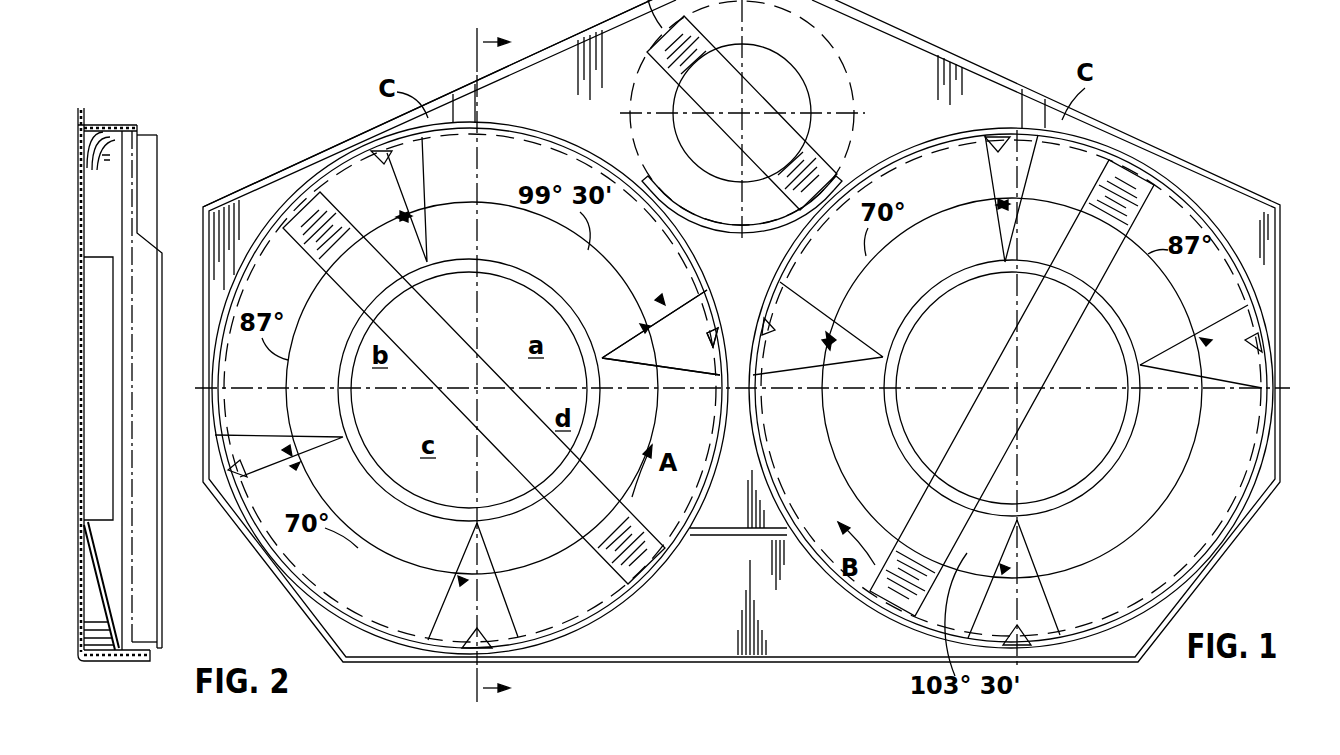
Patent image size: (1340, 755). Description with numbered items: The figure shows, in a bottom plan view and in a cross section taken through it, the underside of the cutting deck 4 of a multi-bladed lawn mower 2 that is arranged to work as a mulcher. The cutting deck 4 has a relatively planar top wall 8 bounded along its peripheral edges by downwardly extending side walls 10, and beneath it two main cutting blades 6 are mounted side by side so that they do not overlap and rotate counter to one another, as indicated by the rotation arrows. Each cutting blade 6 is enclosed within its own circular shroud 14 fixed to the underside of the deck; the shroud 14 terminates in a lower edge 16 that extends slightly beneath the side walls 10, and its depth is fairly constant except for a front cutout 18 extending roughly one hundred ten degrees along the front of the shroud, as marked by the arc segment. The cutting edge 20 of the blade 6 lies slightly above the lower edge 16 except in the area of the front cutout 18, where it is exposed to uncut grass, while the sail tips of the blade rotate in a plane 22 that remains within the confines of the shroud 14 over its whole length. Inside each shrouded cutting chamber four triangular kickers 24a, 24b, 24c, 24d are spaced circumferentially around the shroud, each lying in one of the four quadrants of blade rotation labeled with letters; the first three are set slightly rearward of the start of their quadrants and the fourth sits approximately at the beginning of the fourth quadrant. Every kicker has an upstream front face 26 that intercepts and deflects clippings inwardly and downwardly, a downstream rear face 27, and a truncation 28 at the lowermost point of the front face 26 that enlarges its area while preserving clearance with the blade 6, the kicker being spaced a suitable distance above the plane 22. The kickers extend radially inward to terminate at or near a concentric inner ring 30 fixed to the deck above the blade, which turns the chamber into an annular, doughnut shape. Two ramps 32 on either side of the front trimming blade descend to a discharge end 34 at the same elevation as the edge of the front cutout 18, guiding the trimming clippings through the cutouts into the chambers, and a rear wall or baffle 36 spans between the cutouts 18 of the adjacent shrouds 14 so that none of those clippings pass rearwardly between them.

In FIG. 1, the multi-bladed lawn mower 2 is at (1163, 42).
In FIG. 1, the cutting deck 4 is at (965, 60).
In FIG. 2, the cutting deck 4 is at (78, 332).
In FIG. 1, the cutting blade 6 is at (627, 565).
In FIG. 1, the top wall 8 is at (866, 77).
In FIG. 1, the side wall 10 is at (535, 55).
In FIG. 2, the side wall 10 is at (112, 665).
In FIG. 1, the circular shroud 14 is at (678, 556).
In FIG. 2, the circular shroud 14 is at (100, 125).
In FIG. 2, the lower edge 16 is at (155, 652).
In FIG. 1, the front cutout 18 is at (257, 223).
In FIG. 2, the front cutout 18 is at (138, 197).
In FIG. 1, the cutting edge 20 is at (283, 248).
In FIG. 2, the cutting edge 20 is at (157, 150).
In FIG. 2, the plane of sail tips 22 is at (133, 558).
In FIG. 1, the kicker 24a is at (667, 302).
In FIG. 1, the kicker 24b is at (422, 180).
In FIG. 1, the kicker 24c is at (257, 437).
In FIG. 1, the kicker 24d is at (445, 602).
In FIG. 2, the kicker 24d is at (110, 590).
In FIG. 1, the front face 26 is at (677, 366).
In FIG. 1, the rear face 27 is at (677, 336).
In FIG. 1, the truncation 28 is at (722, 332).
In FIG. 2, the truncation 28 is at (83, 625).
In FIG. 1, the inner ring 30 is at (522, 268).
In FIG. 2, the inner ring 30 is at (84, 235).
In FIG. 1, the ramp 32 is at (615, 70).
In FIG. 1, the discharge end 34 is at (472, 84).
In FIG. 1, the rear wall or baffle 36 is at (716, 238).